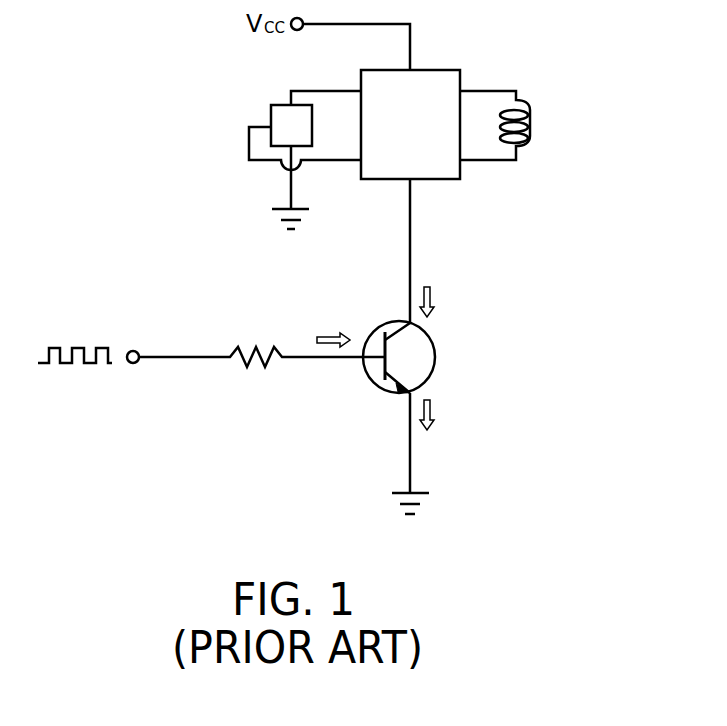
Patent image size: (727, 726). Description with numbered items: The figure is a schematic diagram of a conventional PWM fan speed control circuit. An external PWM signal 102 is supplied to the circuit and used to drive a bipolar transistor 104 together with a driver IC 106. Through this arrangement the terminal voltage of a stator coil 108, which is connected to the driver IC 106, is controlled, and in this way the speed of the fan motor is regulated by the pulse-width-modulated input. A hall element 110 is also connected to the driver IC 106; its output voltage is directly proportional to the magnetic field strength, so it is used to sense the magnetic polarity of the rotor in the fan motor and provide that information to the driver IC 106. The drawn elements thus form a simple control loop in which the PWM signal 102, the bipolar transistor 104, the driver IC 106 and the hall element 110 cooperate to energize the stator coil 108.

The external PWM signal 102 is at (78, 346).
The bipolar transistor 104 is at (432, 341).
The driver IC 106 is at (427, 69).
The stator coil 108 is at (531, 124).
The hall element 110 is at (270, 109).